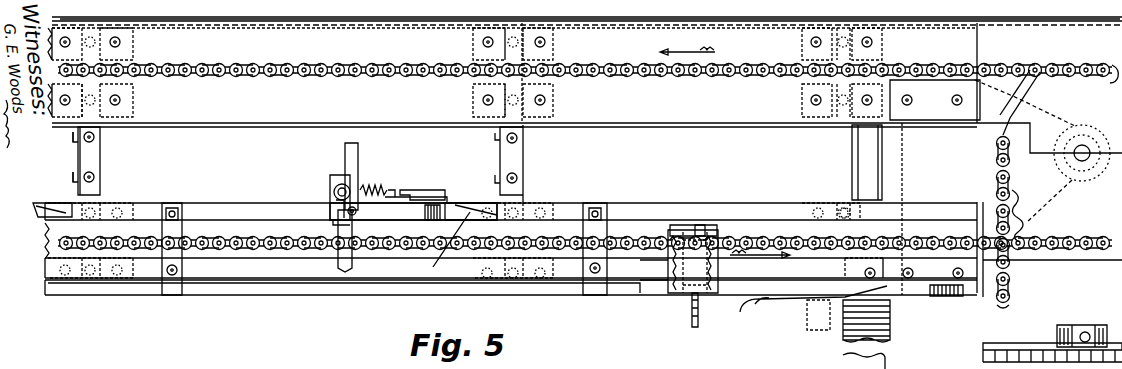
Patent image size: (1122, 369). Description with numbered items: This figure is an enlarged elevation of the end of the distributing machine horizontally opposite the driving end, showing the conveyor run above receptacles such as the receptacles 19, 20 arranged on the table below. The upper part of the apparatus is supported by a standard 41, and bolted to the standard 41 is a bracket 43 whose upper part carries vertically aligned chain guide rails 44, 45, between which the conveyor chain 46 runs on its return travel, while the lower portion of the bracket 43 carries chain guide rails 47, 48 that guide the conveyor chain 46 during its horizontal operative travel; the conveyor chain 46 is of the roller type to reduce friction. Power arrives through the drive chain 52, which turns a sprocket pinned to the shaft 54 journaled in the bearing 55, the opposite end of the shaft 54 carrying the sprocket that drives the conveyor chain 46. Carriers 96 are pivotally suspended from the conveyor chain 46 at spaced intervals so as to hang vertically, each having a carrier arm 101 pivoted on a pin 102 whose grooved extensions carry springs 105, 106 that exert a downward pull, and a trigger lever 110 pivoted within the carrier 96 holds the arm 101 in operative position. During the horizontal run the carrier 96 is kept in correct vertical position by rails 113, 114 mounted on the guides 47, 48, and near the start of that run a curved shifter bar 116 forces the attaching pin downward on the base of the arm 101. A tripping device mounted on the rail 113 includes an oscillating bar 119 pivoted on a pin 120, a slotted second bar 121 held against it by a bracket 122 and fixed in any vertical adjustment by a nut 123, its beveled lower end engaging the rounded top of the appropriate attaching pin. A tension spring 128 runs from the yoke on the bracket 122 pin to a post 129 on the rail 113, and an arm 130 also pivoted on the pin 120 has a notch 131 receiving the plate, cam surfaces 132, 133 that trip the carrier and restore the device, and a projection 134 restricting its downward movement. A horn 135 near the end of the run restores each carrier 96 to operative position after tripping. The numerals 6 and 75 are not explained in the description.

The frame member 6 is at (73, 160).
The receptacle 19 is at (87, 101).
The receptacle 20 is at (509, 102).
The standard 41 is at (892, 326).
The bracket 43 is at (100, 195).
The chain guide rail 44 is at (514, 41).
The chain guide rail 45 is at (699, 100).
The conveyor chain 46 is at (743, 65).
The chain guide rail 47 is at (620, 228).
The chain guide rail 48 is at (650, 262).
The drive chain 52 is at (1040, 338).
The shaft 54 is at (1083, 148).
The bearing 55 is at (1002, 95).
The top rail 75 is at (726, 23).
The carrier 96 is at (683, 220).
The carrier arm 101 is at (693, 320).
The pin 102 is at (712, 228).
The spring 105 is at (672, 266).
The spring 106 is at (725, 268).
The trigger lever 110 is at (698, 226).
The rail 113 is at (220, 208).
The rail 114 is at (150, 292).
The shifter bar 116 is at (210, 272).
The oscillating bar 119 is at (360, 152).
The pin 120 is at (360, 213).
The second bar 121 is at (336, 182).
The bracket 122 is at (330, 190).
The nut 123 is at (337, 206).
The tension spring 128 is at (378, 186).
The post 129 is at (392, 190).
The arm 130 is at (45, 216).
The notch 131 is at (448, 200).
The cam surface 132 is at (435, 221).
The cam surface 133 is at (40, 203).
The projection 134 is at (430, 185).
The horn 135 is at (748, 318).